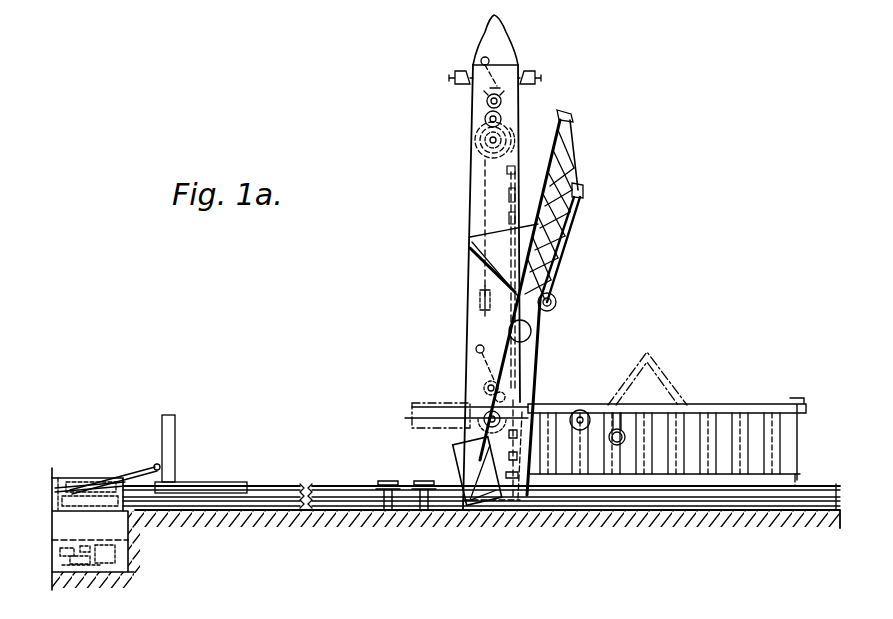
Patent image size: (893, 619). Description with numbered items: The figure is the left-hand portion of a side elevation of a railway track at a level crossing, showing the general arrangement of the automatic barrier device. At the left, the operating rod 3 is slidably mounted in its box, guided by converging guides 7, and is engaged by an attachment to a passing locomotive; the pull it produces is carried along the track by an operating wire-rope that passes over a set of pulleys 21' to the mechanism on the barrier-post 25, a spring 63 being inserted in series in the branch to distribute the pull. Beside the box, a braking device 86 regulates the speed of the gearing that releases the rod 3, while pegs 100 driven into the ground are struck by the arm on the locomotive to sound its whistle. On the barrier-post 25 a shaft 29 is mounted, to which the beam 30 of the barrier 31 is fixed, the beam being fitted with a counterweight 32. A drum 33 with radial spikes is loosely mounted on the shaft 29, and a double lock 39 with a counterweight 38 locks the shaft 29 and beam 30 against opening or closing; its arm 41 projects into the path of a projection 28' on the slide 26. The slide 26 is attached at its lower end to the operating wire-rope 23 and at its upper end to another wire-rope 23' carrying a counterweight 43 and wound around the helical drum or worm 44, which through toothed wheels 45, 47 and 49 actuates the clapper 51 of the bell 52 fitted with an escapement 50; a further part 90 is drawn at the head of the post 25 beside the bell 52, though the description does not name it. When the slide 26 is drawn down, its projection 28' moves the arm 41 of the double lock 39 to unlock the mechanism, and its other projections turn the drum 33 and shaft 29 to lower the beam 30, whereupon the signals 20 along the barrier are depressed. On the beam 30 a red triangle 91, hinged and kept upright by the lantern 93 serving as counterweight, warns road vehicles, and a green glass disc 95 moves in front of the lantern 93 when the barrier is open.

The operating rod 3 is at (132, 474).
The converging guides 7 is at (60, 480).
The signals 20 is at (136, 526).
The set of pulleys 21' is at (406, 477).
The operating wire-rope 23 is at (468, 543).
The wire-rope 23' is at (464, 271).
The barrier-post 25 is at (472, 192).
The slide 26 is at (584, 195).
The projection 28' is at (506, 491).
The shaft 29 is at (478, 419).
The beam 30 is at (549, 166).
The barrier 31 is at (565, 232).
The counterweight 32 is at (478, 461).
The drum 33 is at (489, 512).
The counterweight 38 is at (475, 353).
The double lock 39 is at (483, 386).
The arm 41 is at (577, 416).
The counterweight 43 is at (486, 305).
The helical drum or worm 44 is at (476, 138).
The toothed wheel 45 is at (509, 134).
The toothed wheel 47 is at (486, 117).
The toothed wheel 49 is at (503, 103).
The escapement 50 is at (533, 78).
The clapper 51 is at (482, 58).
The bell 52 is at (511, 50).
The spring 63 is at (210, 482).
The braking device 86 is at (132, 570).
The hook 90 is at (459, 74).
The red triangle 91 is at (478, 246).
The lantern 93 is at (614, 430).
The green glass disc 95 is at (528, 338).
The pegs 100 is at (170, 414).